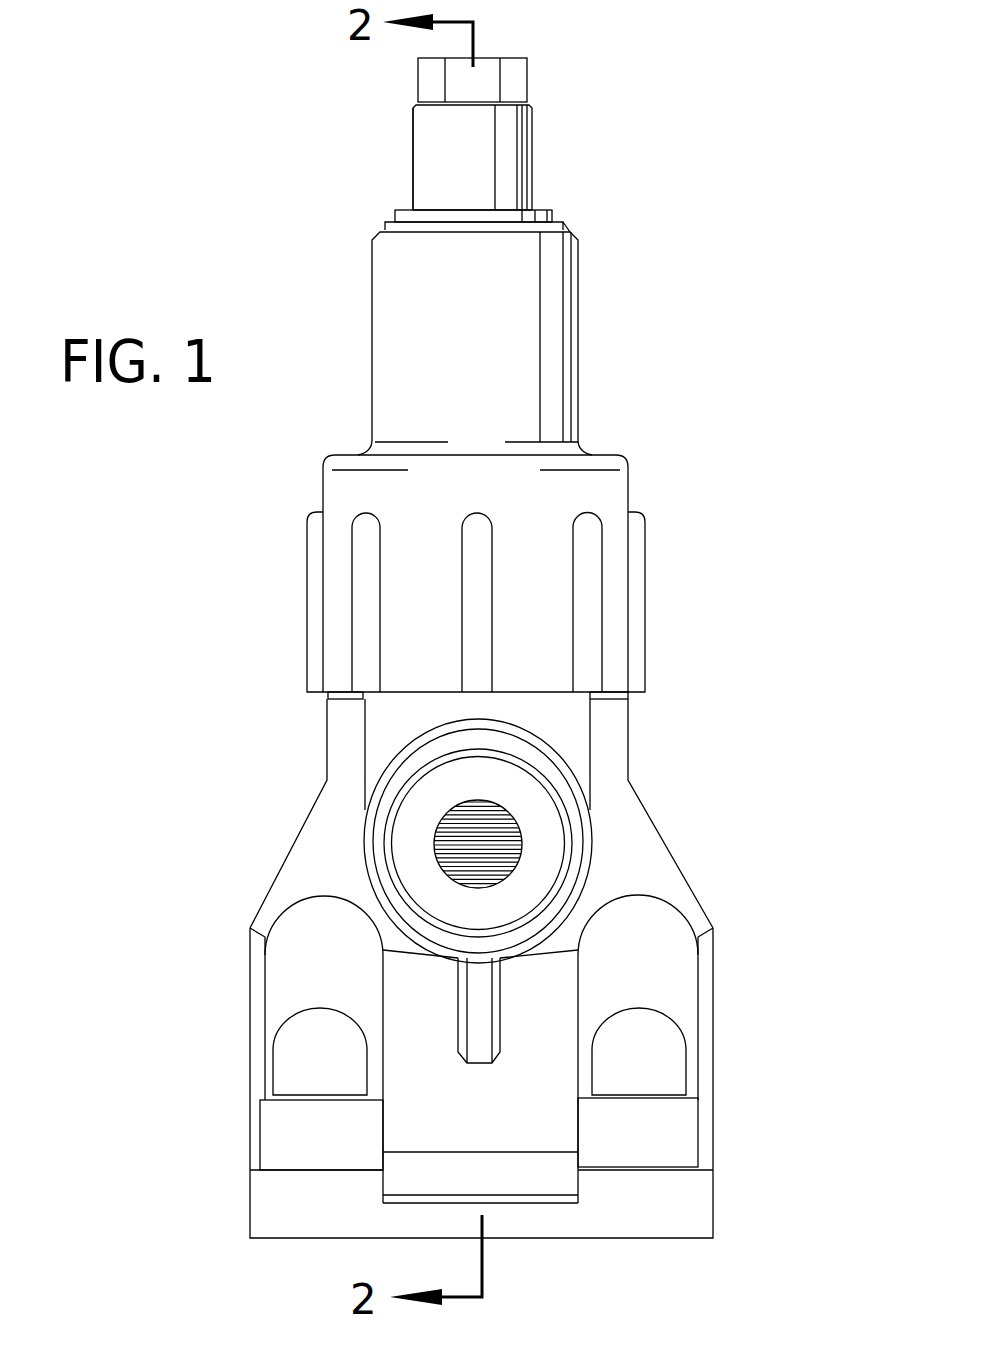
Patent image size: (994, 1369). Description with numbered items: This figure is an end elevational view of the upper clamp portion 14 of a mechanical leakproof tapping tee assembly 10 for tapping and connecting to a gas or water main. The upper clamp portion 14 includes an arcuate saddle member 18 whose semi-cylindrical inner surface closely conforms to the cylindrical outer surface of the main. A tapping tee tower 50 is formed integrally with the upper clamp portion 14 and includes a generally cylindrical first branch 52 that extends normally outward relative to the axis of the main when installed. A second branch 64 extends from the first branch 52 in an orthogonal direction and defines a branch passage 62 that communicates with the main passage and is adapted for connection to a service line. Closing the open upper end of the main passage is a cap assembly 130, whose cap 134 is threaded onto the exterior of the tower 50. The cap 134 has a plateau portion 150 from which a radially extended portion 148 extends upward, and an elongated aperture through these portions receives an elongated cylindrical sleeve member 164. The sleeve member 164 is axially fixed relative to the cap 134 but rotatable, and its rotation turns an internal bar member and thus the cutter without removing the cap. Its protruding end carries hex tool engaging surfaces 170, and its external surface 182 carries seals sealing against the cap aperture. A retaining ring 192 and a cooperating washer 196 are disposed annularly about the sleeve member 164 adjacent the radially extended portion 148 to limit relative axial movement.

The tapping tee assembly 10 is at (245, 664).
The upper clamp portion 14 is at (730, 1030).
The arcuate saddle member 18 is at (412, 1093).
The tapping tee tower 50 is at (383, 728).
The first branch 52 is at (575, 748).
The branch passage 62 is at (548, 847).
The second branch 64 is at (575, 805).
The cap assembly 130 is at (603, 418).
The cap 134 is at (497, 360).
The radially extended portion 148 is at (555, 280).
The plateau portion 150 is at (600, 488).
The sleeve member 164 is at (535, 155).
The tool engaging surfaces 170 is at (515, 78).
The external surface 182 is at (413, 155).
The retaining ring 192 is at (552, 212).
The washer 196 is at (395, 213).